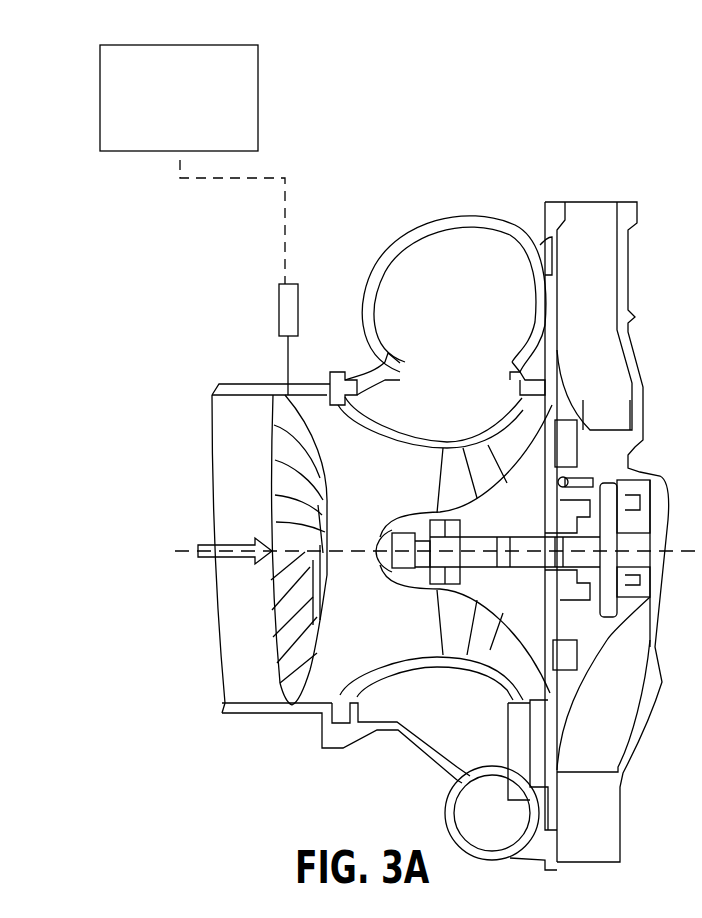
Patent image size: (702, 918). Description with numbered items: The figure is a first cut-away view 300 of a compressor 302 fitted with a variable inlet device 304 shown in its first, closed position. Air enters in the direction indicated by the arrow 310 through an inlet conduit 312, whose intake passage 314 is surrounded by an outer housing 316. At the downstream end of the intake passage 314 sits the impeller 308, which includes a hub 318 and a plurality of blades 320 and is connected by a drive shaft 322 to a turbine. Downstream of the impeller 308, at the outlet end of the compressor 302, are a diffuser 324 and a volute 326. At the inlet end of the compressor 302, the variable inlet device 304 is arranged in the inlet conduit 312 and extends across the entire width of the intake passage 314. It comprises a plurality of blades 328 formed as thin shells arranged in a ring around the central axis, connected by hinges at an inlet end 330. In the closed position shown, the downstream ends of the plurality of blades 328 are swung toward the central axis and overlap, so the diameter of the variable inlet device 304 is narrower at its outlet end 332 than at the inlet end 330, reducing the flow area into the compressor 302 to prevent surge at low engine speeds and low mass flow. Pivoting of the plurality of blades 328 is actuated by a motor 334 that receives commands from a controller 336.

The first cut-away view 300 is at (441, 158).
The compressor 302 is at (362, 212).
The variable inlet device 304 is at (268, 692).
The impeller 308 is at (395, 512).
The arrow 310 is at (205, 558).
The inlet conduit 312 is at (183, 462).
The intake passage 314 is at (245, 635).
The outer housing 316 is at (262, 384).
The hub 318 is at (396, 562).
The plurality of blades 320 is at (458, 640).
The drive shaft 322 is at (495, 566).
The diffuser 324 is at (540, 338).
The volute 326 is at (420, 232).
The plurality of blades 328 is at (290, 503).
The inlet end 330 is at (280, 450).
The outlet end 332 is at (326, 508).
The motor 334 is at (279, 306).
The controller 336 is at (198, 110).